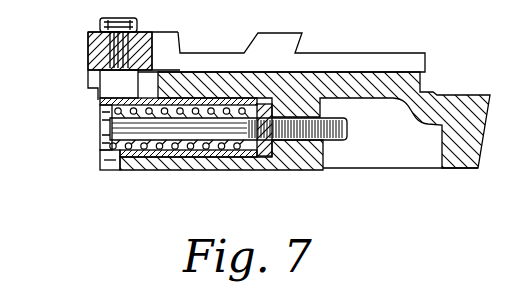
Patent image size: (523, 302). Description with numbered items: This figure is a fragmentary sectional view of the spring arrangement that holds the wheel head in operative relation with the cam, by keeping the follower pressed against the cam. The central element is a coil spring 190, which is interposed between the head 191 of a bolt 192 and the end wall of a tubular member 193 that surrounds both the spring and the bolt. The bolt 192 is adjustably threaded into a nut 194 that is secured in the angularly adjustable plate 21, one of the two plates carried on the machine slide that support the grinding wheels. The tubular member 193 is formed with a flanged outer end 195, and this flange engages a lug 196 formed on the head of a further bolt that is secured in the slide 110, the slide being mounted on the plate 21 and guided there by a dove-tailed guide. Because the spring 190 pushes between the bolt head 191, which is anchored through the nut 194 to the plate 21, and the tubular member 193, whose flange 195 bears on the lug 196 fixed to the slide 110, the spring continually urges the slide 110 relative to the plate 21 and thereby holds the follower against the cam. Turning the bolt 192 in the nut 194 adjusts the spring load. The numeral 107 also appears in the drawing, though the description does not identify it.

The angularly adjustable plate 21 is at (455, 158).
The clamping screw 107 is at (118, 50).
The slide 110 is at (368, 62).
The coil spring 190 is at (180, 167).
The head of bolt 191 is at (100, 130).
The bolt 192 is at (114, 167).
The tubular member 193 is at (248, 165).
The nut 194 is at (305, 168).
The flanged outer end 195 is at (103, 101).
The lug 196 is at (130, 84).